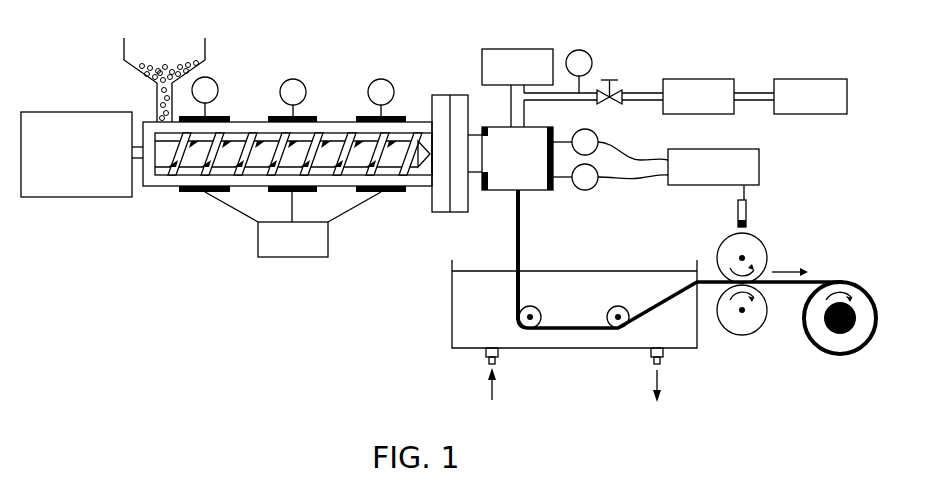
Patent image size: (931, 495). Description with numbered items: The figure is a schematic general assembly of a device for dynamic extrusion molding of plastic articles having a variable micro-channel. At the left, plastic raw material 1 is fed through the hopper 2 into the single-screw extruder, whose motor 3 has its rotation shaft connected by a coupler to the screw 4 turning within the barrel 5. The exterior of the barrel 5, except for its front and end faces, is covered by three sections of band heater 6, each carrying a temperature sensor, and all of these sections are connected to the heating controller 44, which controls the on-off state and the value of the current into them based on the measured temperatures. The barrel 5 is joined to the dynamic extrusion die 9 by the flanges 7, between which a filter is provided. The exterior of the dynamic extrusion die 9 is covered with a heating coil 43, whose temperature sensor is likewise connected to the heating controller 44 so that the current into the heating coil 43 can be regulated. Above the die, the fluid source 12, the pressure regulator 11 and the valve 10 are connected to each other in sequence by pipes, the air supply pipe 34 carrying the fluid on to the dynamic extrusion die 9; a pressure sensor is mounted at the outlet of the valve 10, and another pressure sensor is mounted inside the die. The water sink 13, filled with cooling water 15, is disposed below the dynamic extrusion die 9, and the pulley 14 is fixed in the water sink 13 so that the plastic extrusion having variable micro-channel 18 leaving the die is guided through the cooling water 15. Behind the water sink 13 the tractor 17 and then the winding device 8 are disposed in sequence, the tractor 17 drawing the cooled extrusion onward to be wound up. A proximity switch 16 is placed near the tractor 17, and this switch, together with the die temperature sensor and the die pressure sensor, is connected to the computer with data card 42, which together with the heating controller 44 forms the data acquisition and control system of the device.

The plastic raw material 1 is at (163, 68).
The hopper 2 is at (207, 50).
The motor 3 is at (75, 185).
The screw 4 is at (243, 140).
The barrel 5 is at (325, 133).
The band heater 6 is at (232, 118).
The flange 7 is at (440, 105).
The winding device 8 is at (843, 292).
The dynamic extrusion die 9 is at (525, 168).
The valve 10 is at (612, 80).
The pressure regulator 11 is at (700, 88).
The fluid source 12 is at (808, 88).
The water sink 13 is at (451, 310).
The pulley 14 is at (531, 306).
The cooling water 15 is at (640, 290).
The proximity switch 16 is at (740, 208).
The tractor 17 is at (755, 257).
The plastic extrusion having variable micro-channel 18 is at (518, 232).
The air supply pipe 34 is at (557, 101).
The computer with data card 42 is at (742, 165).
The heating coil 43 is at (556, 190).
The heating controller 44 is at (318, 240).